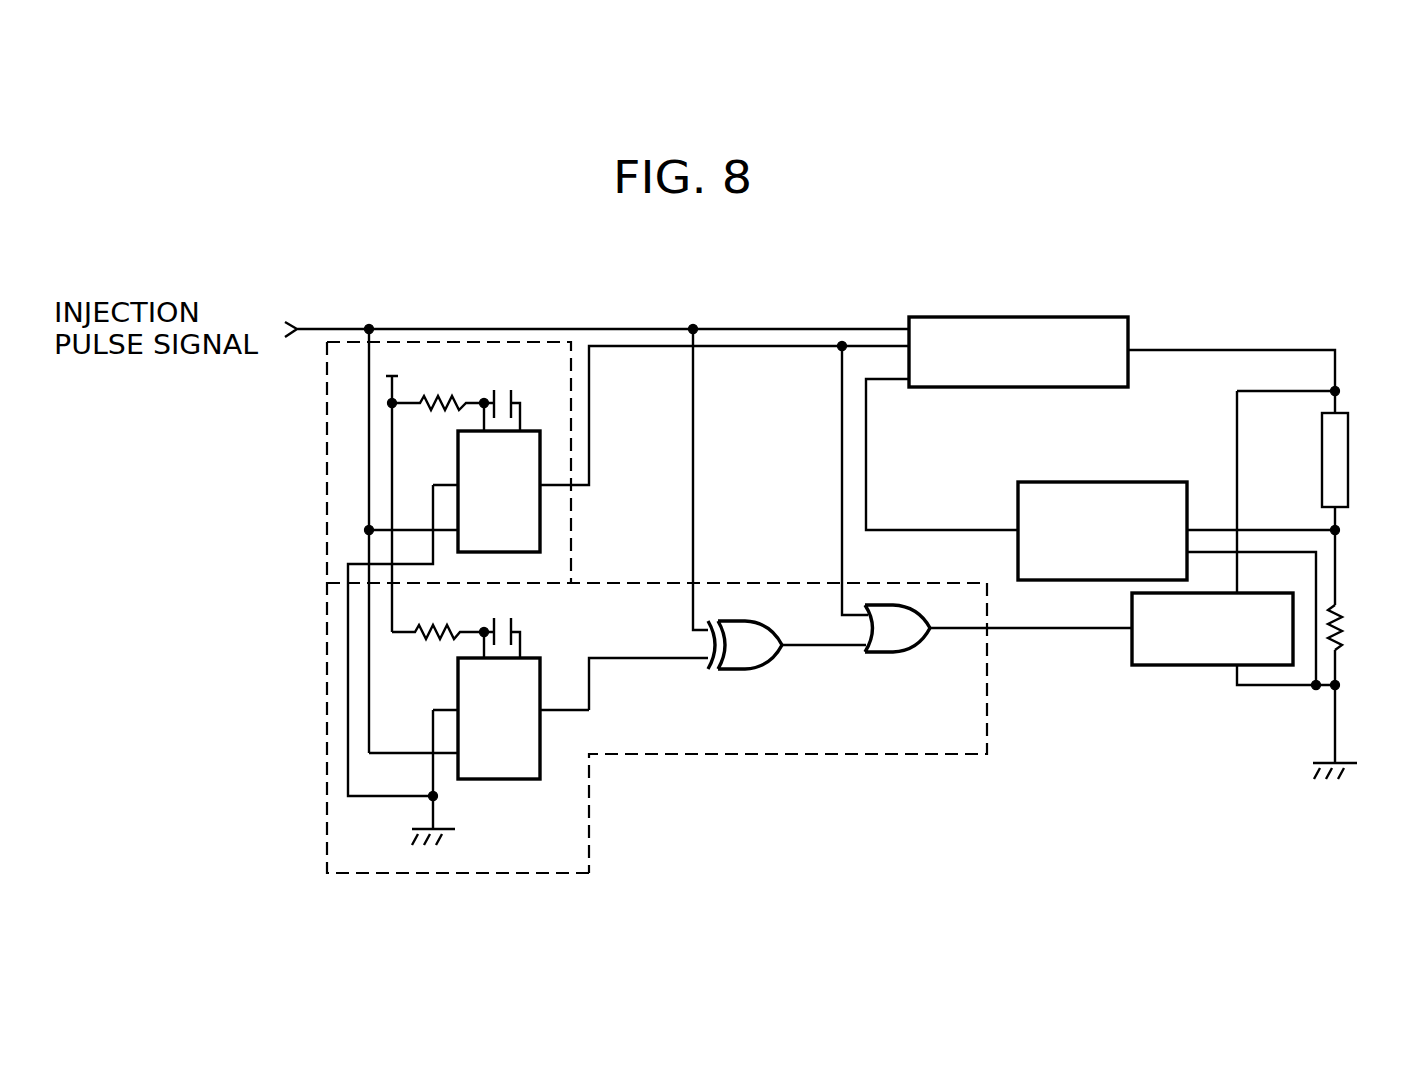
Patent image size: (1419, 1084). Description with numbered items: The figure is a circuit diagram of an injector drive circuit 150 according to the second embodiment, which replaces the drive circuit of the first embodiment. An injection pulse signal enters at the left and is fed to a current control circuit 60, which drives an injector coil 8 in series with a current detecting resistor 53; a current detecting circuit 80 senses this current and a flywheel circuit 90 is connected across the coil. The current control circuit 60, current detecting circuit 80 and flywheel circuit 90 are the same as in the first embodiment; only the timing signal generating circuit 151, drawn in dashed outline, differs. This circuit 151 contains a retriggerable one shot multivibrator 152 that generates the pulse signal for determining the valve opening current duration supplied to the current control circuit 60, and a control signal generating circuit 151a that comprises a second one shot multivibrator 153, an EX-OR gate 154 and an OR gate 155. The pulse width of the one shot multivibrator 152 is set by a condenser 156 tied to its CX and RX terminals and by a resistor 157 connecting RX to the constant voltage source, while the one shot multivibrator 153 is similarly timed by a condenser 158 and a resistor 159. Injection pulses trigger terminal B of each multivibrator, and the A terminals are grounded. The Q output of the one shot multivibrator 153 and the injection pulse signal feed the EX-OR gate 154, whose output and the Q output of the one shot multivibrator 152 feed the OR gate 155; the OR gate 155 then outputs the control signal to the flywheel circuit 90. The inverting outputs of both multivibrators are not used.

The injector drive circuit 150 is at (797, 291).
The current control circuit 60 is at (1044, 316).
The current detecting circuit 80 is at (1117, 481).
The flywheel circuit 90 is at (1190, 668).
The injector solenoid coil 8 is at (1350, 455).
The current detecting resistor 53 is at (1348, 625).
The timing signal generating circuit 151 is at (571, 561).
The control signal generating circuit 151a is at (742, 755).
The one shot multivibrator 152 is at (528, 430).
The one shot multivibrator 153 is at (510, 780).
The EX-OR gate 154 is at (743, 672).
The OR gate 155 is at (893, 655).
The condenser 156 is at (500, 391).
The resistor 157 is at (438, 375).
The condenser 158 is at (498, 617).
The resistor 159 is at (438, 640).